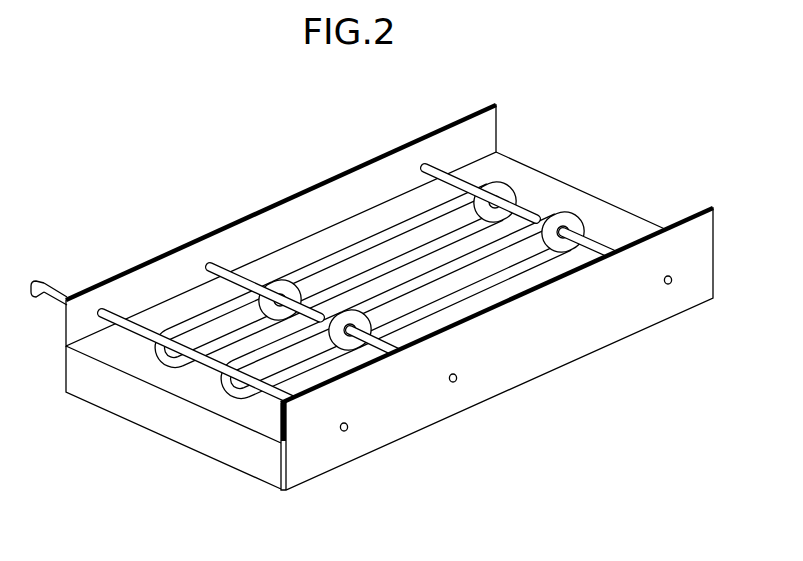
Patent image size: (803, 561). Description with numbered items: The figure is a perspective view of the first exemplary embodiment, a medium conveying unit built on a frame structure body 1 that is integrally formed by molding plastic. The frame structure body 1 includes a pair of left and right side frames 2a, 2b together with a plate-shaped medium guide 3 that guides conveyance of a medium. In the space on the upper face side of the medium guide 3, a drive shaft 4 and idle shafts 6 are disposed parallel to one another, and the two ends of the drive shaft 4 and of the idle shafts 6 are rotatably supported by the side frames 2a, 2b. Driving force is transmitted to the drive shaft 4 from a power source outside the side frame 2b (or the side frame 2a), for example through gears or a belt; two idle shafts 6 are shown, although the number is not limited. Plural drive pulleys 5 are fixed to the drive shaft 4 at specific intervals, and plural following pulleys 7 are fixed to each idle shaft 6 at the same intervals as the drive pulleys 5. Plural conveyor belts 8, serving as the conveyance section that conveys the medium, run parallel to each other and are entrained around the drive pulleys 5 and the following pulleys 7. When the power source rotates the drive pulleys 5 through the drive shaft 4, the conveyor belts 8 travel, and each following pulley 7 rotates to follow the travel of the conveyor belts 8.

The frame structure body 1 is at (372, 303).
The side frame 2a is at (540, 364).
The side frame 2b is at (337, 197).
The medium guide 3 is at (567, 190).
The drive shaft 4 is at (50, 285).
The drive pulley 5 is at (250, 386).
The idle shaft 6 is at (430, 162).
The following pulley 7 is at (580, 222).
The conveyor belt 8 is at (506, 190).